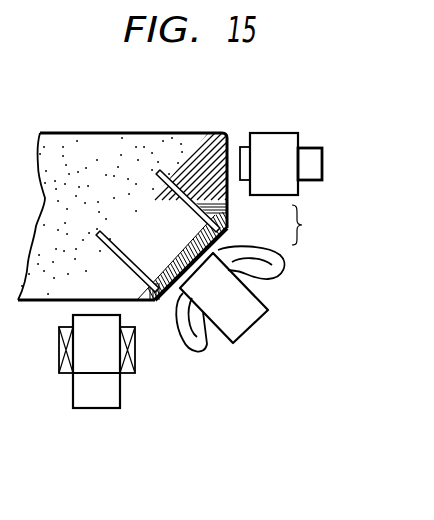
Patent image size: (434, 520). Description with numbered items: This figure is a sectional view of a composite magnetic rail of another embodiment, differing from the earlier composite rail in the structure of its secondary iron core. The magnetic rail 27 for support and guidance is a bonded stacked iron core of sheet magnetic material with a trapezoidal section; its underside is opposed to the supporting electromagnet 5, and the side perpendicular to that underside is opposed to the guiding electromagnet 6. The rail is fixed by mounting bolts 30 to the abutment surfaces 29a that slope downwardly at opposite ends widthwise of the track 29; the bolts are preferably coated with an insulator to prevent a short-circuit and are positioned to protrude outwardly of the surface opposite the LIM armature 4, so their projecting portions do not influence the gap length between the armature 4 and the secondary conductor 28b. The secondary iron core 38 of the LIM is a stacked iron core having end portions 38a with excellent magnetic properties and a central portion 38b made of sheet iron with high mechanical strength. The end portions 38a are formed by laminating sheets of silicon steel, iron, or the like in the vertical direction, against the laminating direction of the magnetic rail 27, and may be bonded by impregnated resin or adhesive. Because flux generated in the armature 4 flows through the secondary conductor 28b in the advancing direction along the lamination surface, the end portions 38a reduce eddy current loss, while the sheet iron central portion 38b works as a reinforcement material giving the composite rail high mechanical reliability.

The track 29 is at (100, 163).
The abutment surface 29a is at (80, 272).
The mounting bolt 30 is at (162, 171).
The magnetic rail for support and guidance 27 is at (198, 163).
The secondary conductor 28b is at (168, 284).
The secondary iron core 38 is at (334, 239).
The stacked iron core end portions 38a is at (224, 212).
The central portion 38b is at (217, 237).
The LIM armature 4 is at (250, 316).
The supporting electromagnet 5 is at (85, 395).
The guiding electromagnet 6 is at (309, 156).